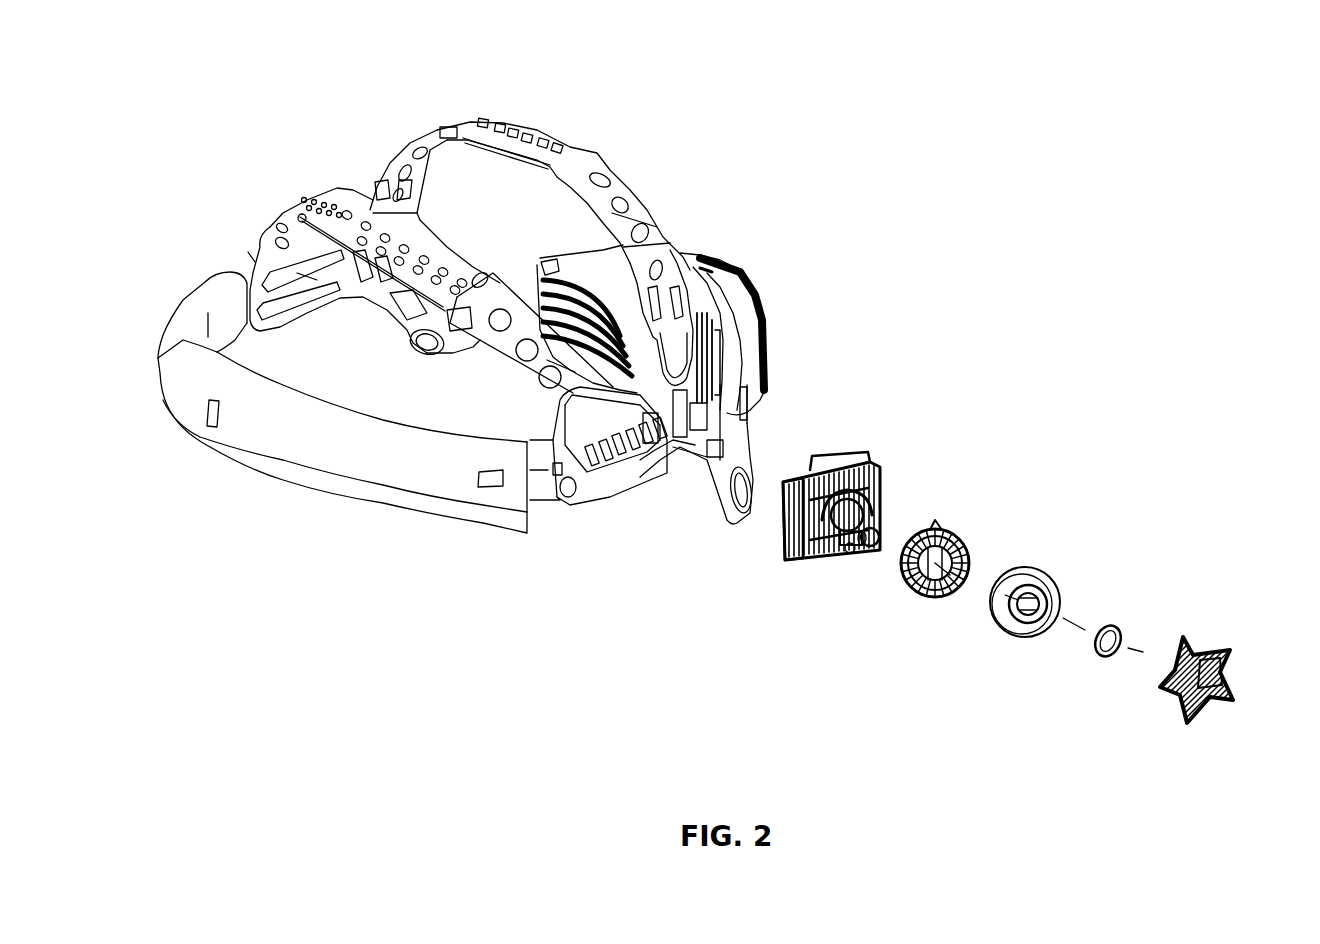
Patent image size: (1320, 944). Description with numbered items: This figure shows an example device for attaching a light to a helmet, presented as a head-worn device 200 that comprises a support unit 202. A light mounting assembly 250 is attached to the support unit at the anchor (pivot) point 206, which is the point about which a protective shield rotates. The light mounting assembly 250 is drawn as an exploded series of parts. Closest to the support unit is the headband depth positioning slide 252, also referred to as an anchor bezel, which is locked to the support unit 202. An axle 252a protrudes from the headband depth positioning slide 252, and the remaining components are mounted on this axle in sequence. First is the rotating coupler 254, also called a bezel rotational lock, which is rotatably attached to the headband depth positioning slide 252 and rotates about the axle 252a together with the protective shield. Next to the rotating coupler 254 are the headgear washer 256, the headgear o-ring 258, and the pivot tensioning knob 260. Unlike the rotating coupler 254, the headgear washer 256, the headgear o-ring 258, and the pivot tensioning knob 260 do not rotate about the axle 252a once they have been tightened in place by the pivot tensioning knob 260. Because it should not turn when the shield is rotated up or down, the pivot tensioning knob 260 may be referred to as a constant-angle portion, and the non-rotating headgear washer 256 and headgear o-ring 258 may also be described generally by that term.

The head-worn device 200 is at (176, 76).
The support unit 202 is at (376, 512).
The anchor (pivot) point 206 is at (572, 512).
The light mounting assembly 250 is at (877, 370).
The headband depth positioning slide 252 is at (776, 571).
The axle 252a is at (843, 553).
The rotating coupler 254 is at (912, 603).
The headgear washer 256 is at (1022, 648).
The headgear o-ring 258 is at (1105, 662).
The pivot tensioning knob 260 is at (1210, 728).